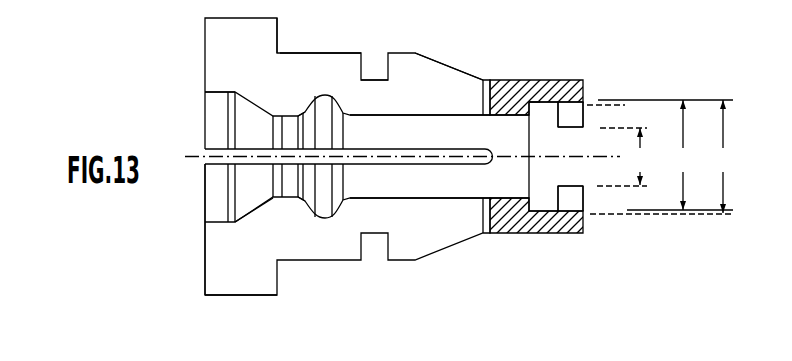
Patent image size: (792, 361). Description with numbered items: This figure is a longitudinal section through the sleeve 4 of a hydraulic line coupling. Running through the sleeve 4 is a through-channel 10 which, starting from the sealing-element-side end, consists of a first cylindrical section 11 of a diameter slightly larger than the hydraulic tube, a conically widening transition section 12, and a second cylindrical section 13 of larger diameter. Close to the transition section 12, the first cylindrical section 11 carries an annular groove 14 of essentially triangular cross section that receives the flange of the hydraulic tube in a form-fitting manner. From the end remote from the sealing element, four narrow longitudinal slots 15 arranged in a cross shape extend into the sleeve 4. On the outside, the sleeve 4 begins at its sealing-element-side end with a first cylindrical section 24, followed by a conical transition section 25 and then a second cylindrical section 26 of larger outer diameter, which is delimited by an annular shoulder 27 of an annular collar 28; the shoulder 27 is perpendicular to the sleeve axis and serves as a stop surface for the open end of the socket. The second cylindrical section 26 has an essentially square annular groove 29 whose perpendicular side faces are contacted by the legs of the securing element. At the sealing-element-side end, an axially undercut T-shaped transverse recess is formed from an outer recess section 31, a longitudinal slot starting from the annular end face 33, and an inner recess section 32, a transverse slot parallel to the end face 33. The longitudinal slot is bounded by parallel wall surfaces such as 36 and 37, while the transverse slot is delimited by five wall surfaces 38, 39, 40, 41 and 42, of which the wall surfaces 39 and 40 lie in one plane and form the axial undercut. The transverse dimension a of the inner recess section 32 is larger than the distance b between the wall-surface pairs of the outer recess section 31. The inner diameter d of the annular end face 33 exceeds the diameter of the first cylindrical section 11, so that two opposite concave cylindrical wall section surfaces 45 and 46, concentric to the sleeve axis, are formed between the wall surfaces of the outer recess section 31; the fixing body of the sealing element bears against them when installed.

The sleeve 4 is at (198, 244).
The through-channel 10 is at (205, 117).
The first cylindrical section 11 is at (407, 116).
The transition section 12 is at (257, 205).
The second cylindrical section 13 is at (217, 97).
The annular groove 14 is at (312, 213).
The longitudinal slots 15 is at (417, 164).
The first cylindrical section 24 is at (515, 234).
The conical transition section 25 is at (440, 62).
The second cylindrical section 26 is at (322, 53).
The annular shoulder 27 is at (279, 34).
The annular collar 28 is at (247, 272).
The annular groove 29 is at (372, 73).
The outer recess section 31 is at (584, 170).
The inner recess section 32 is at (522, 134).
The annular end face 33 is at (584, 100).
The wall surface 36 is at (566, 184).
The wall surface 37 is at (571, 129).
The wall surface 38 is at (538, 101).
The wall surface 39 is at (547, 130).
The wall surface 40 is at (552, 164).
The wall surface 41 is at (546, 126).
The wall surface 42 is at (548, 234).
The concave cylindrical wall section surface 45 is at (566, 196).
The concave cylindrical wall section surface 46 is at (576, 114).
The transverse dimension a is at (721, 156).
The distance b is at (622, 157).
The inner diameter d is at (660, 157).